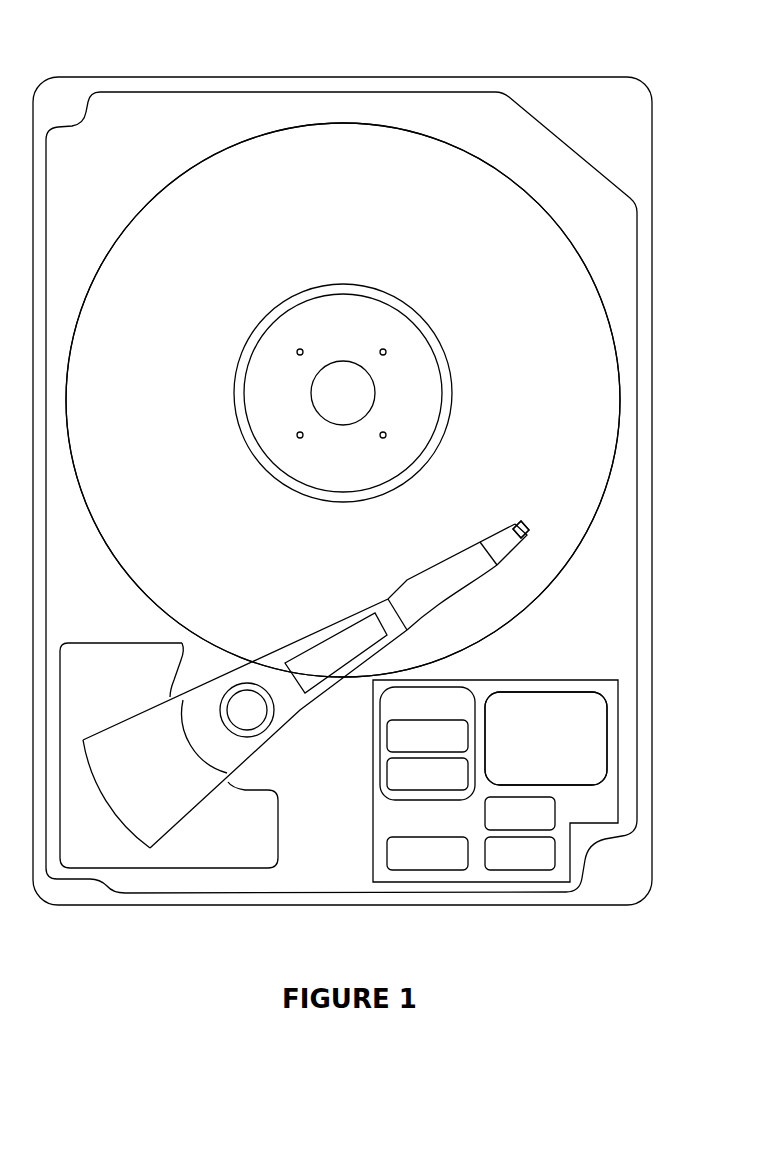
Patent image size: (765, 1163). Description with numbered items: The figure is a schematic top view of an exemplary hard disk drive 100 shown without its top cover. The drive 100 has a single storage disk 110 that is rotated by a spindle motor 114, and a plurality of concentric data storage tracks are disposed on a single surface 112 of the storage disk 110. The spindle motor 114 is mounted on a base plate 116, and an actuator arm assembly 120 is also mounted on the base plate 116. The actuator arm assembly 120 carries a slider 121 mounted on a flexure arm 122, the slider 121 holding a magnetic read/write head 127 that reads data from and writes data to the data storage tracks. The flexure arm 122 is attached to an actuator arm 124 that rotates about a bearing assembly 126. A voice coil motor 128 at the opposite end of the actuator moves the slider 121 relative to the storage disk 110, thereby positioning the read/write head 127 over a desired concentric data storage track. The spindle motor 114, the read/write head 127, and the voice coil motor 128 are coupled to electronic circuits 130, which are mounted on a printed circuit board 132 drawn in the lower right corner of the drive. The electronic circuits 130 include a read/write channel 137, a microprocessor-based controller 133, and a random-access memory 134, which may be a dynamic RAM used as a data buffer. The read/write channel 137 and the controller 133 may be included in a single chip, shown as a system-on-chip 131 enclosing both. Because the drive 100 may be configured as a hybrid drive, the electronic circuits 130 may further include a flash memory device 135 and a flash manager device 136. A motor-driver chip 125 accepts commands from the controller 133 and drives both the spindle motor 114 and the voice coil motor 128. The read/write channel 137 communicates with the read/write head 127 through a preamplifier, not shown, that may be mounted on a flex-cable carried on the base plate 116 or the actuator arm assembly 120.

The hard disk drive 100 is at (397, 77).
The storage disk 110 is at (148, 199).
The surface 112 is at (175, 378).
The spindle motor 114 is at (428, 340).
The base plate 116 is at (638, 515).
The actuator arm assembly 120 is at (297, 608).
The slider 121 is at (530, 530).
The flexure arm 122 is at (496, 532).
The actuator arm 124 is at (406, 579).
The motor-driver chip 125 is at (445, 865).
The bearing assembly 126 is at (263, 737).
The read/write head 127 is at (519, 515).
The voice coil motor 128 is at (282, 817).
The electronic circuits 130 is at (497, 690).
The system-on-chip 131 is at (445, 716).
The printed circuit board 132 is at (563, 680).
The controller 133 is at (445, 746).
The random-access memory 134 is at (537, 825).
The flash memory device 135 is at (560, 771).
The flash manager device 136 is at (537, 865).
The read/write channel 137 is at (445, 785).